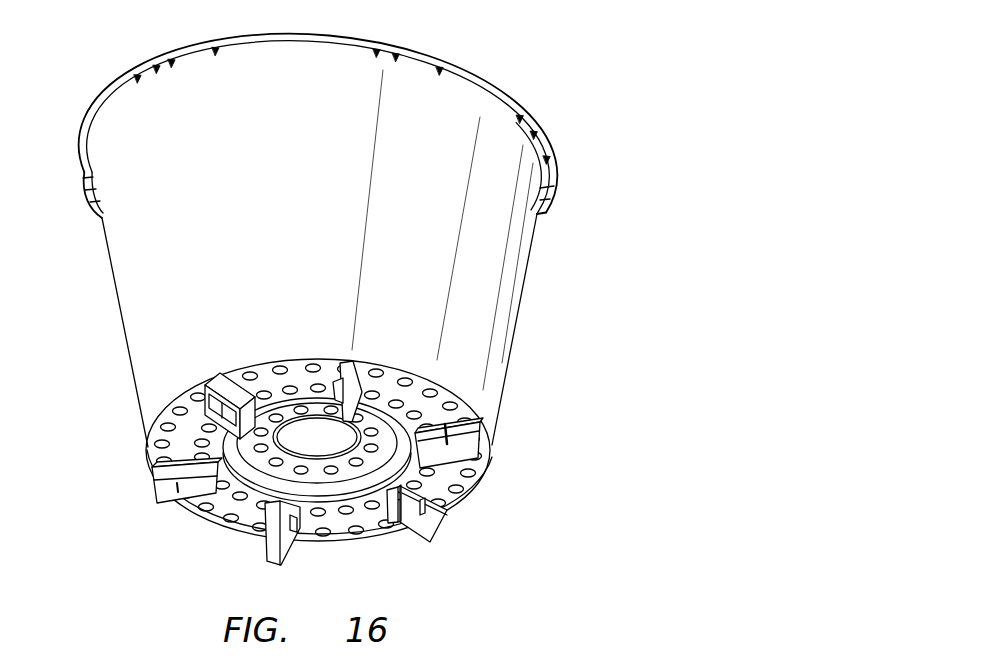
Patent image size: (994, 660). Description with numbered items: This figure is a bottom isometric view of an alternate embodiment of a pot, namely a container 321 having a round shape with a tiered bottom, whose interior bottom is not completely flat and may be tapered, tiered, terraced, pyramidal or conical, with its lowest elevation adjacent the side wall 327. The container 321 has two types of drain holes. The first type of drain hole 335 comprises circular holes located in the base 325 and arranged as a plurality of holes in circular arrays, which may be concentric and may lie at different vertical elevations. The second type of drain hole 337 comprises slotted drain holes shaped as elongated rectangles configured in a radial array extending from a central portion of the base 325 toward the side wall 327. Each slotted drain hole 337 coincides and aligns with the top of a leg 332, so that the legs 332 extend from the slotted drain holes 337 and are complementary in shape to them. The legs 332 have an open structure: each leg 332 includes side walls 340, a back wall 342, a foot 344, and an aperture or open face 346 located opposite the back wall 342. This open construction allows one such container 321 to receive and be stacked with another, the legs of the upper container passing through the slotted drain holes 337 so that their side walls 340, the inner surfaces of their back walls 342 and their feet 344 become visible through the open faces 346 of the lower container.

The container 321 is at (627, 52).
The base 325 is at (146, 452).
The side wall 327 is at (122, 260).
The legs 332 is at (263, 548).
The first type of drain hole 335 is at (293, 365).
The second type of drain hole 337 is at (221, 371).
The side walls 340 is at (357, 366).
The back wall 342 is at (472, 443).
The foot 344 is at (420, 544).
The aperture or open face 346 is at (156, 500).